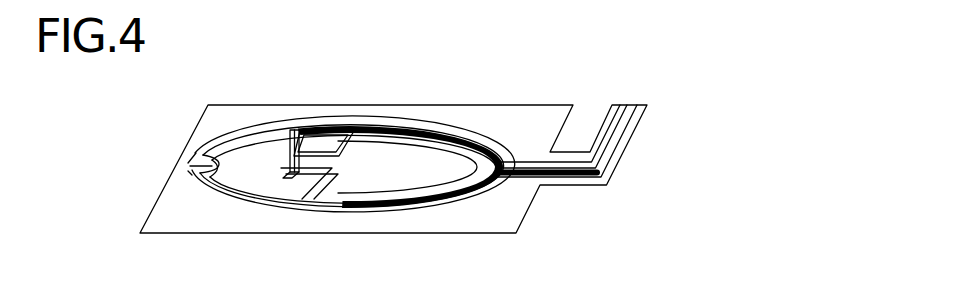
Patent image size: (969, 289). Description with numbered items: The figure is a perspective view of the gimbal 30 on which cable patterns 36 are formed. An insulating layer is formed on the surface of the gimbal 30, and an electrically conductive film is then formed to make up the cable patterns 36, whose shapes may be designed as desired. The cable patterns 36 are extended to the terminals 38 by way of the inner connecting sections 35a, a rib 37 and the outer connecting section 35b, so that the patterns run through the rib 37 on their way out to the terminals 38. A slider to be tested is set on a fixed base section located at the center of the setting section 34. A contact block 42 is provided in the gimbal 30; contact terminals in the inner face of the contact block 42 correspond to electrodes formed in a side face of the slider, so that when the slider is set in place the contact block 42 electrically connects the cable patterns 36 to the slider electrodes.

The gimbal 30 is at (240, 108).
The setting section 34 is at (385, 150).
The inner connecting sections 35a is at (332, 197).
The outer connecting section 35b is at (197, 163).
The cable patterns 36 is at (455, 140).
The rib 37 is at (413, 203).
The terminals 38 is at (633, 107).
The contact block 42 is at (292, 128).